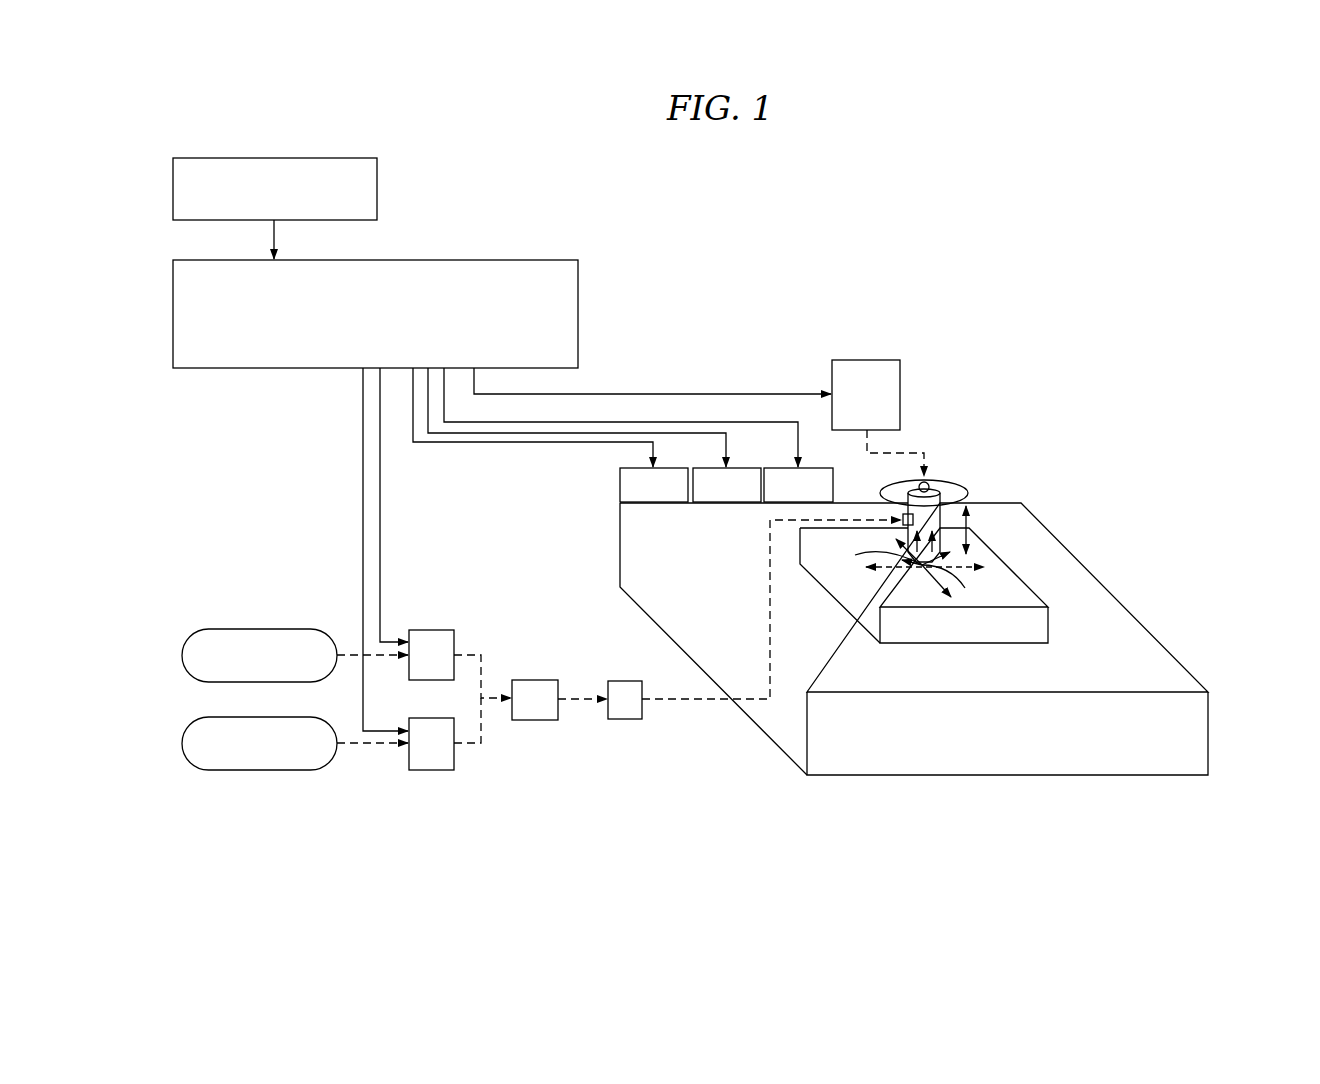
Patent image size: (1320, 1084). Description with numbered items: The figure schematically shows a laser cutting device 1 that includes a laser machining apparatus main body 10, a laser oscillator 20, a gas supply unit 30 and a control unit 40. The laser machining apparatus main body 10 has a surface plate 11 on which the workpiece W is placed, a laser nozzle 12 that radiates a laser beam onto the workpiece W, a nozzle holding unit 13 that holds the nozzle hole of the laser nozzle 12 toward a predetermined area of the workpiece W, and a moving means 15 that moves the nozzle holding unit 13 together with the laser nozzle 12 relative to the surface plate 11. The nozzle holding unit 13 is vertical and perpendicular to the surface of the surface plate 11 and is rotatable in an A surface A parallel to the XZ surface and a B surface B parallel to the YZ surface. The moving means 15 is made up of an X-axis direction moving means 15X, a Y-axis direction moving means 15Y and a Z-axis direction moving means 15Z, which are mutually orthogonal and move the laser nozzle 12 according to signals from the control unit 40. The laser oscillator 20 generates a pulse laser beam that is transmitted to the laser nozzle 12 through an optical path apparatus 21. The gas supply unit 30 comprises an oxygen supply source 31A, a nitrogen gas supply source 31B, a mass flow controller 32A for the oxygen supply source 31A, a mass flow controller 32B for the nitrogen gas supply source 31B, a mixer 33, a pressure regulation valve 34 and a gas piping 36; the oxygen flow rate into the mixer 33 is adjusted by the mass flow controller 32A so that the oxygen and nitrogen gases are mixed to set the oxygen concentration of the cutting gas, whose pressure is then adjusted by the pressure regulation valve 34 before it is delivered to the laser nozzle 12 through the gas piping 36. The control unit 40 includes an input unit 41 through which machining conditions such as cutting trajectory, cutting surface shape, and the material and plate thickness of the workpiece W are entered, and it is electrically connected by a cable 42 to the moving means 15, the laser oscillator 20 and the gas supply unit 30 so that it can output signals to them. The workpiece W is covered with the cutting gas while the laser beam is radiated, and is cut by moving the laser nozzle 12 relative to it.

The laser cutting device 1 is at (1077, 208).
The laser machining apparatus main body 10 is at (1113, 437).
The surface plate 11 is at (1097, 587).
The laser nozzle 12 is at (933, 520).
The nozzle holding unit 13 is at (951, 475).
The moving means 15 is at (773, 573).
The X-axis direction moving means 15X is at (630, 483).
The Y-axis direction moving means 15Y is at (722, 493).
The Z-axis direction moving means 15Z is at (777, 493).
The laser oscillator 20 is at (862, 368).
The optical path apparatus 21 is at (905, 453).
The gas supply unit 30 is at (539, 723).
The oxygen supply source 31A is at (258, 637).
The nitrogen gas supply source 31B is at (247, 760).
The mass flow controller 32A is at (433, 637).
The mass flow controller 32B is at (430, 760).
The mixer 33 is at (533, 712).
The pressure regulation valve 34 is at (622, 712).
The gas piping 36 is at (771, 670).
The control unit 40 is at (593, 267).
The input unit 41 is at (377, 185).
The cable 42 is at (363, 462).
The workpiece W is at (1037, 623).
The A surface A is at (922, 565).
The B surface B is at (945, 572).